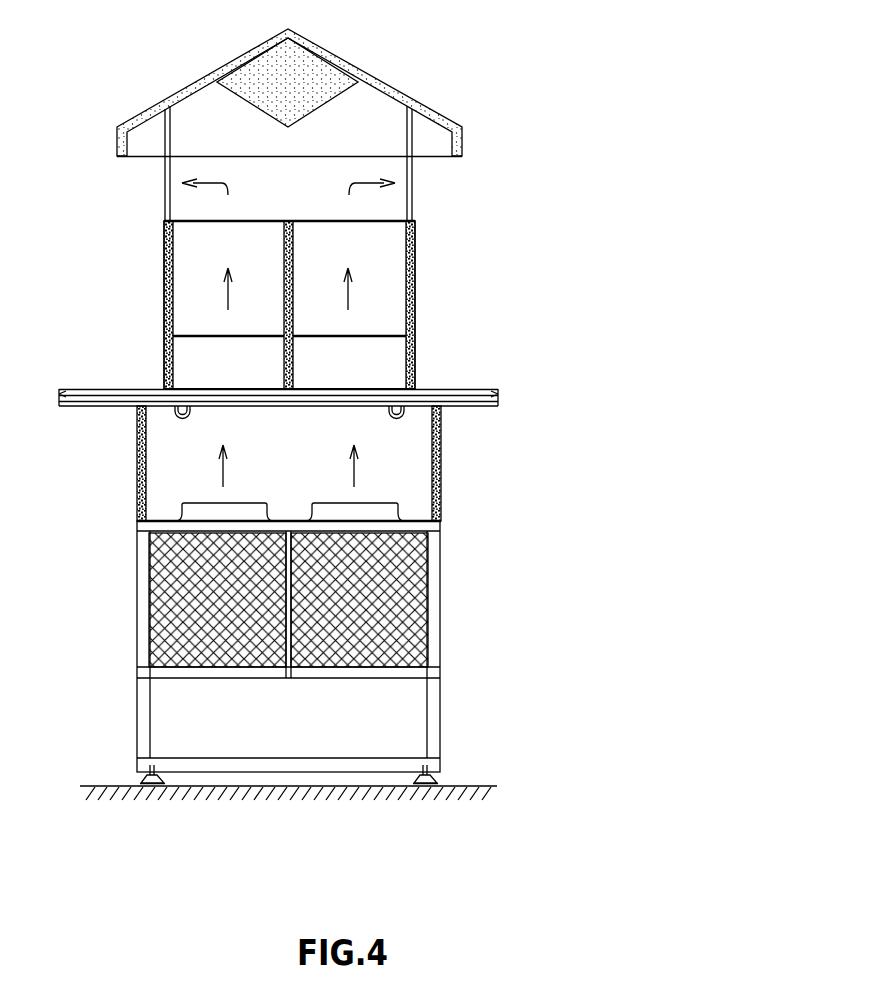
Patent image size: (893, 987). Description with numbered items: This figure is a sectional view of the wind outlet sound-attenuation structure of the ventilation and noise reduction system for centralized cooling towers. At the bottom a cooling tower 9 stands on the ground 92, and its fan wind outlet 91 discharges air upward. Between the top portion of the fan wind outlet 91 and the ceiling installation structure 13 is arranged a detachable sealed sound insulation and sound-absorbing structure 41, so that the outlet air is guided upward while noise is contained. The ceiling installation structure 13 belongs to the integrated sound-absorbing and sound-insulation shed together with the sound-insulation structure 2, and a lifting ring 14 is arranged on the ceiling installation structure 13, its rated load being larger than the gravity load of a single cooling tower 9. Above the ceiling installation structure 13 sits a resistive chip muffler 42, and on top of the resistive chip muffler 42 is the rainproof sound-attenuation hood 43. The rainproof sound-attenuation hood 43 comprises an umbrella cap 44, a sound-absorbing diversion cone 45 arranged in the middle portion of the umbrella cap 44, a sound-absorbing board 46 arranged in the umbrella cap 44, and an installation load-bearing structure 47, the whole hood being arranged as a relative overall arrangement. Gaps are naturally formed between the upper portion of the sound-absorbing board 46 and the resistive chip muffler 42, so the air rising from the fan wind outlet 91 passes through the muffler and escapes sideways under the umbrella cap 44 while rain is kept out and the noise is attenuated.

The sound-insulation structure 2 is at (102, 393).
The ceiling installation structure 13 is at (88, 402).
The lifting ring 14 is at (180, 417).
The detachable sealed sound insulation and sound-absorbing structure 41 is at (440, 440).
The resistive chip muffler 42 is at (387, 313).
The rainproof sound-attenuation hood 43 is at (402, 133).
The umbrella cap 44 is at (288, 29).
The sound-absorbing diversion cone 45 is at (290, 117).
The sound-absorbing board 46 is at (442, 118).
The installation load-bearing structure 47 is at (412, 185).
The cooling tower 9 is at (222, 627).
The fan wind outlet 91 is at (209, 510).
The ground 92 is at (113, 787).